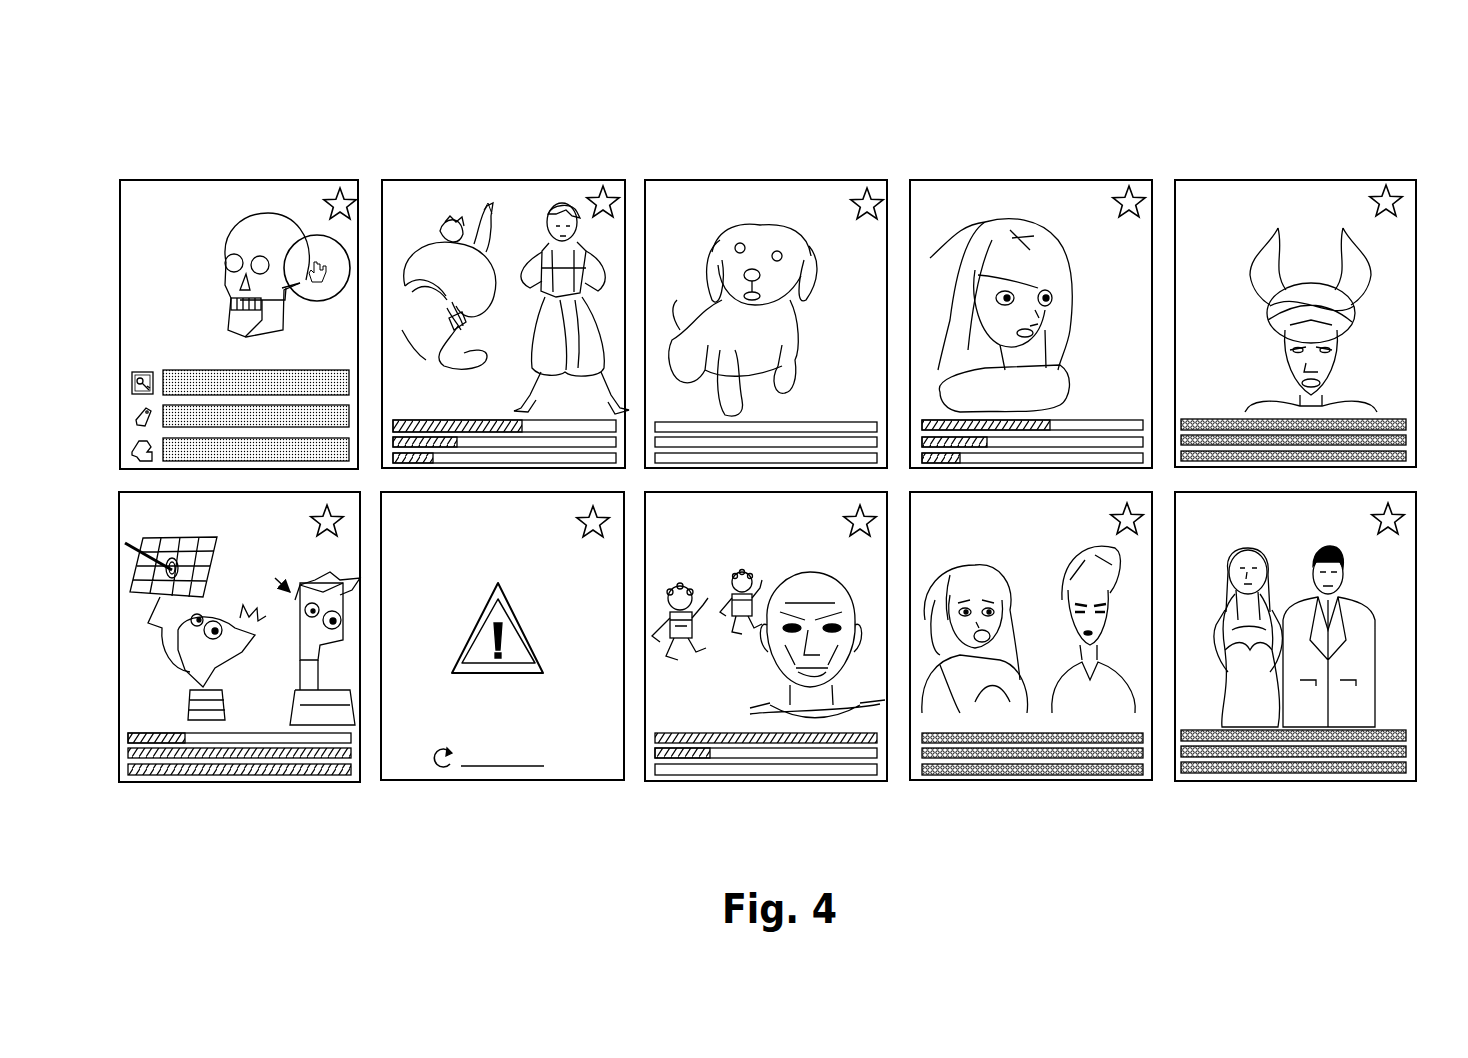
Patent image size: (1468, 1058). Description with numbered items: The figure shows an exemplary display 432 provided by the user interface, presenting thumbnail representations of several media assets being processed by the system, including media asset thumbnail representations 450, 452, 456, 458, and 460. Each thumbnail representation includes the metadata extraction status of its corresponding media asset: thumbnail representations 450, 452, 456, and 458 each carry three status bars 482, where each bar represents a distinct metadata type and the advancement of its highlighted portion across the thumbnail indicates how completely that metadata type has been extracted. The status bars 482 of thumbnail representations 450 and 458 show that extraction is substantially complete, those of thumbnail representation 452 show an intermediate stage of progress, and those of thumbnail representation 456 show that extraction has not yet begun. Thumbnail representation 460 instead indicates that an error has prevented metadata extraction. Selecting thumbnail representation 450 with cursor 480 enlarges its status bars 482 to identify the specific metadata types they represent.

The display 432 is at (1229, 85).
The media asset thumbnail representation 450 is at (243, 180).
The media asset thumbnail representation 456 is at (766, 180).
The media asset thumbnail representation 452 is at (1010, 180).
The media asset thumbnail representation 458 is at (1321, 180).
The media asset thumbnail representation 460 is at (472, 782).
The cursor 480 is at (322, 302).
The status bars 482 is at (214, 355).